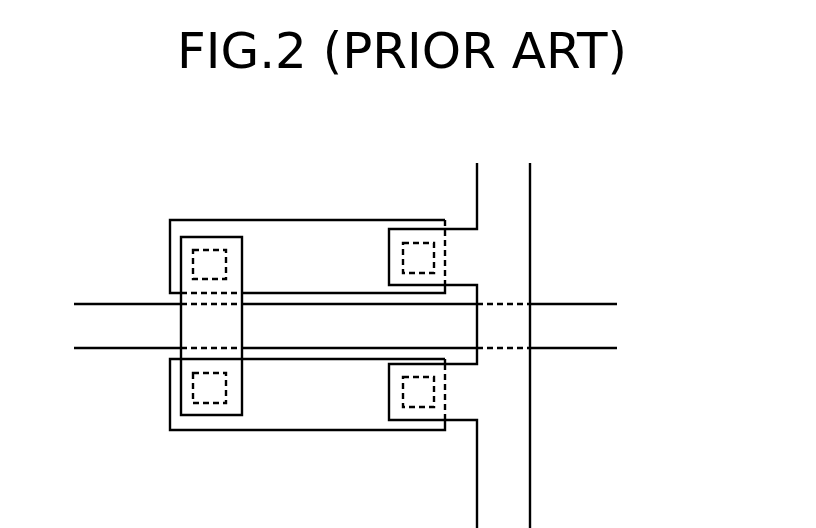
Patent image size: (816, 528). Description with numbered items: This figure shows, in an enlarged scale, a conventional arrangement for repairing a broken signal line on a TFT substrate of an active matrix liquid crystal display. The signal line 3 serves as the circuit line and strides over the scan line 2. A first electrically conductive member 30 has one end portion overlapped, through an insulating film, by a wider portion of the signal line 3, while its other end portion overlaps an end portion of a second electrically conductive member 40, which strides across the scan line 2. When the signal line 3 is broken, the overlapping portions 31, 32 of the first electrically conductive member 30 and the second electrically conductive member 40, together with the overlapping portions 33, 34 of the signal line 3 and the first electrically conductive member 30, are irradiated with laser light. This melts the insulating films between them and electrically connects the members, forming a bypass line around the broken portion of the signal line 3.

The scan line 2 is at (100, 318).
The signal line 3 is at (517, 252).
The first electrically conductive member 30 is at (310, 237).
The overlapping portion 31 is at (213, 250).
The overlapping portion 32 is at (210, 405).
The overlapping portion 33 is at (418, 407).
The overlapping portion 34 is at (420, 242).
The second electrically conductive member 40 is at (188, 373).